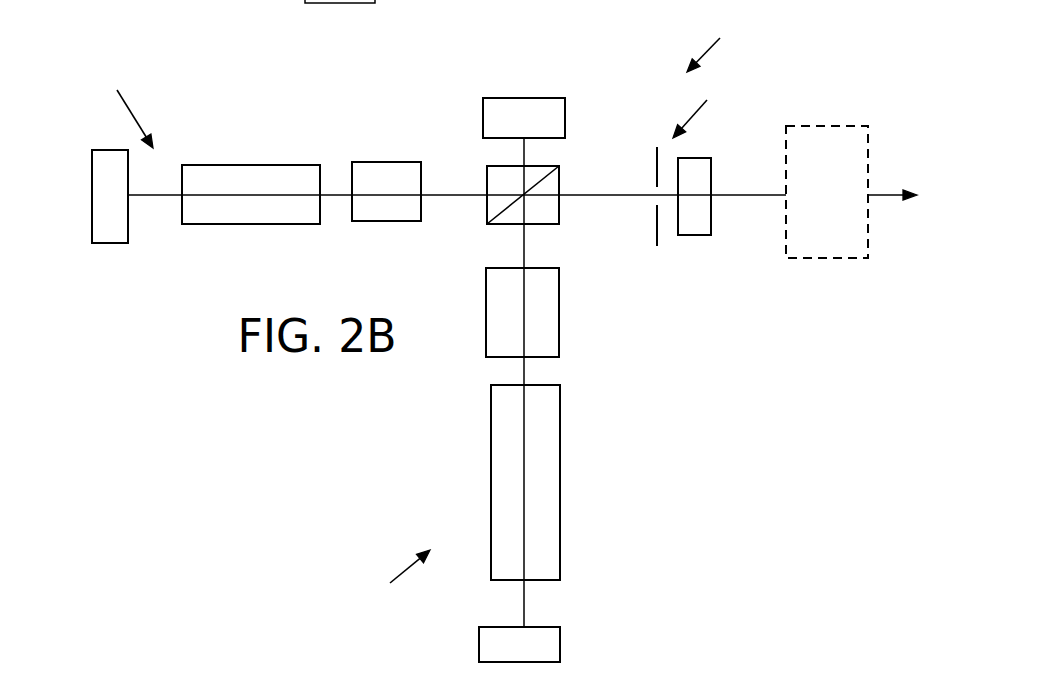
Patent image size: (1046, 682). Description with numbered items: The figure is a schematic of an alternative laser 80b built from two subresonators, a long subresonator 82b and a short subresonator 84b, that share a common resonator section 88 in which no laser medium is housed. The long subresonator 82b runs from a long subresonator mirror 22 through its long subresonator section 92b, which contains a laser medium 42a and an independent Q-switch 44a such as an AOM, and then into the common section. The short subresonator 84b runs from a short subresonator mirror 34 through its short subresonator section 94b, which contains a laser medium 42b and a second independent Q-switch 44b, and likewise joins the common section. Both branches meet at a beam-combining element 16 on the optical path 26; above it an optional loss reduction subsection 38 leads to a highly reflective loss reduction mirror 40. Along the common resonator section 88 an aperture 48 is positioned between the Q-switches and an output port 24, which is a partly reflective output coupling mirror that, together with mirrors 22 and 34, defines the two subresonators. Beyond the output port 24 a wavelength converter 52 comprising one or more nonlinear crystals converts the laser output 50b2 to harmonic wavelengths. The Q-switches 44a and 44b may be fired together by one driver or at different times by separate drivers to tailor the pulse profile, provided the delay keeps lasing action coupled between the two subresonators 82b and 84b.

The short subresonator mirror 34 is at (105, 150).
The short subresonator 84b is at (122, 103).
The short subresonator section 94b is at (160, 197).
The laser medium 42b is at (247, 225).
The Q-switch 44b is at (385, 162).
The polarizing beamsplitter 16 is at (495, 165).
The loss reduction subsection 38 is at (527, 156).
The loss reduction mirror 40 is at (518, 97).
The aperture 48 is at (657, 163).
The optical path 26 is at (623, 197).
The laser 80b is at (721, 39).
The common resonator section 88 is at (700, 105).
The output port 24 is at (700, 158).
The wavelength converter 52 is at (822, 125).
The laser output 50b2 is at (747, 200).
The Q-switch 44a is at (560, 313).
The laser medium 42a is at (560, 445).
The long subresonator 82b is at (392, 584).
The long subresonator section 92b is at (522, 603).
The long subresonator mirror 22 is at (560, 647).